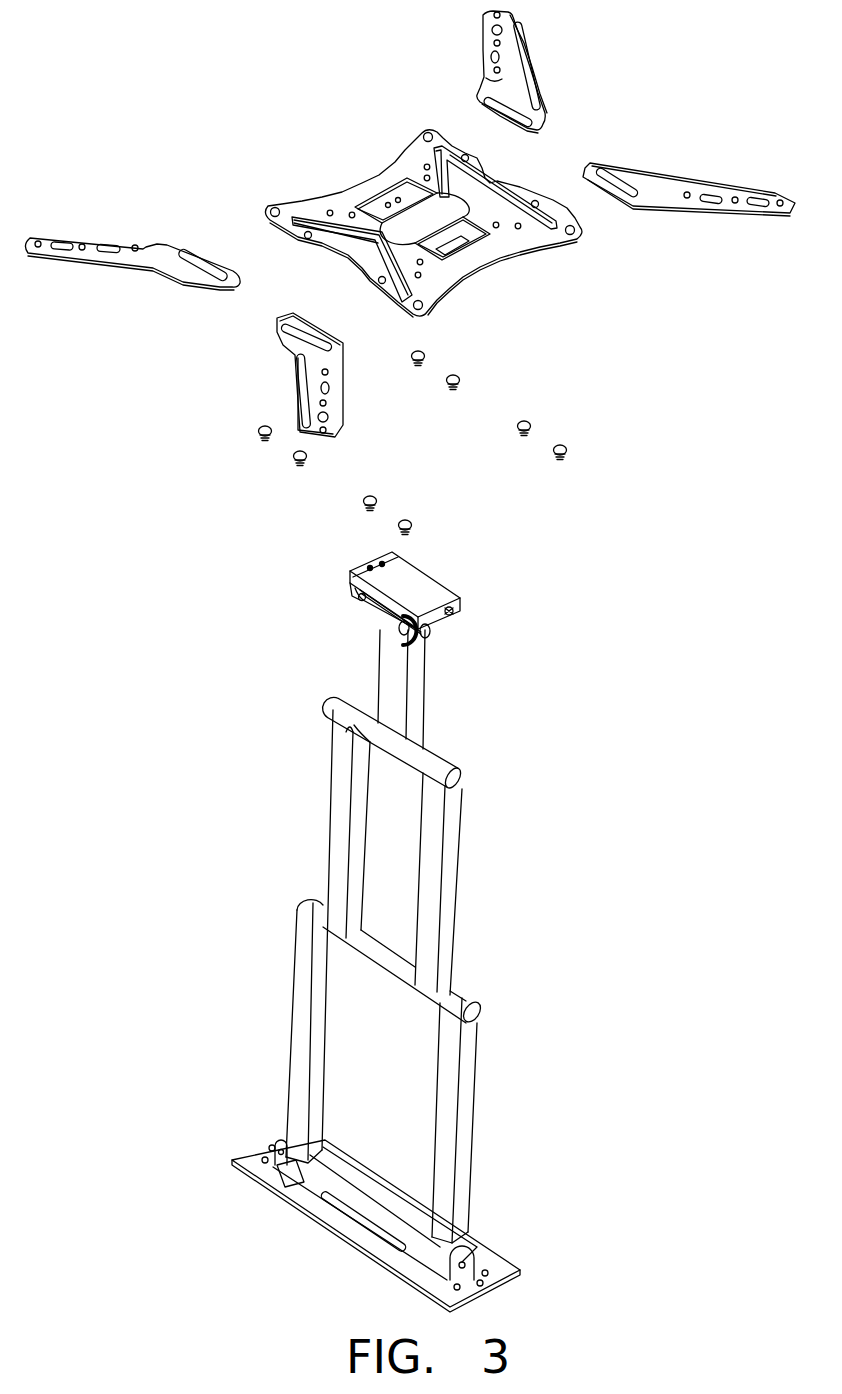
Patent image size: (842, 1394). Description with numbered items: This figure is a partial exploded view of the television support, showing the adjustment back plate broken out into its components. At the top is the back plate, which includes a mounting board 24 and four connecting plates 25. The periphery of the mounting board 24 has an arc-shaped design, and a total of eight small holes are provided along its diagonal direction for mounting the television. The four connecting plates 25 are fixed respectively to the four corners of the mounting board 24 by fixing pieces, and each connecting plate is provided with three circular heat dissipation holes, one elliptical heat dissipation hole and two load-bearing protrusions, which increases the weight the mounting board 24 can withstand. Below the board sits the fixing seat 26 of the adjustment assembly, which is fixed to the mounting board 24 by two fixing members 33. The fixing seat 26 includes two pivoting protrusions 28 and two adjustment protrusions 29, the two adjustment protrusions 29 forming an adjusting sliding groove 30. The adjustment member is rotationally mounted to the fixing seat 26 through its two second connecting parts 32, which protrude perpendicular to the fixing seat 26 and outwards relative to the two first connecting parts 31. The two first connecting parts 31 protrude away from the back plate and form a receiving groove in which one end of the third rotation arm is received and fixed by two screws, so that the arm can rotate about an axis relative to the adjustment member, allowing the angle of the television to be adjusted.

The mounting board 24 is at (337, 203).
The connecting plates 25 is at (93, 247).
The fixing seat 26 is at (417, 585).
The pivoting protrusions 28 is at (358, 598).
The adjustment protrusions 29 is at (412, 642).
The adjusting sliding groove 30 is at (453, 613).
The first connecting parts 31 is at (430, 617).
The second connecting parts 32 is at (382, 607).
The fixing members 33 is at (370, 568).